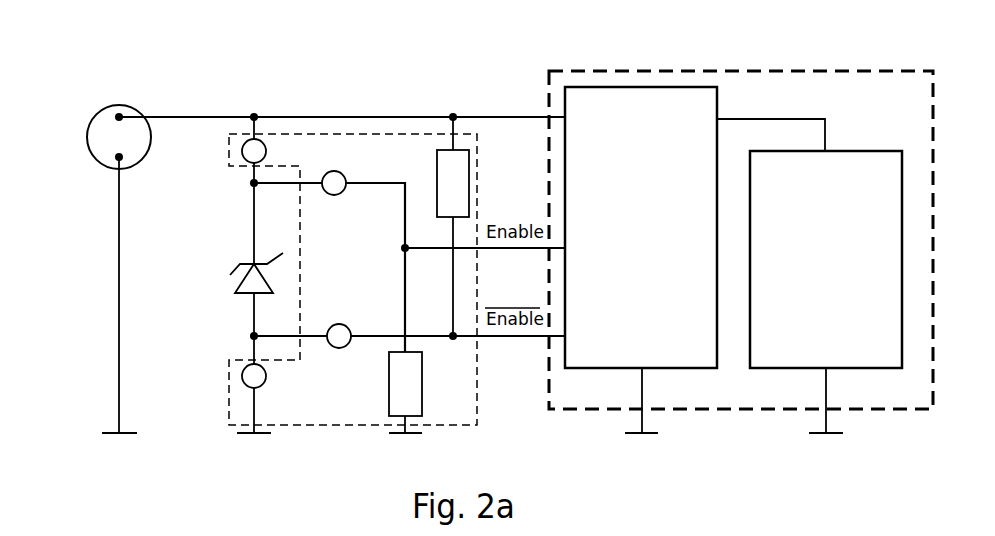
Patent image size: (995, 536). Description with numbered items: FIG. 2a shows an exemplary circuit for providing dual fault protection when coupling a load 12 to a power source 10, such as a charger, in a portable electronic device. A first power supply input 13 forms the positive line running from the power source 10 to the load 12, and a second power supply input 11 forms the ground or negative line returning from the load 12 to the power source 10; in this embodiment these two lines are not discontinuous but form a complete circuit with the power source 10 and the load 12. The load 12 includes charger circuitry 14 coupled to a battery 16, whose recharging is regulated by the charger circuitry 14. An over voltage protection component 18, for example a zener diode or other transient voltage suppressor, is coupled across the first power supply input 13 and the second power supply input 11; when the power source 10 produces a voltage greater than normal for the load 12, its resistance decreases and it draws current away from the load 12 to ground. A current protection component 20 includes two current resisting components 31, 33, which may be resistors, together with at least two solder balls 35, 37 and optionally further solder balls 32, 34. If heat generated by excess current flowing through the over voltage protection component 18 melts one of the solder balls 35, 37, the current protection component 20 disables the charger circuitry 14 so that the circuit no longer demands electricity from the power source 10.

The power source 10 is at (87, 136).
The second power supply input 11 is at (119, 296).
The load 12 is at (740, 70).
The first power supply input 13 is at (329, 116).
The charger circuitry 14 is at (603, 369).
The battery 16 is at (792, 370).
The over voltage protection component 18 is at (235, 292).
The current protection component 20 is at (477, 168).
The current resisting component 31 is at (389, 393).
The solder ball 32 is at (335, 195).
The current resisting component 33 is at (437, 166).
The solder ball 34 is at (334, 324).
The solder ball 35 is at (264, 144).
The solder ball 37 is at (267, 380).